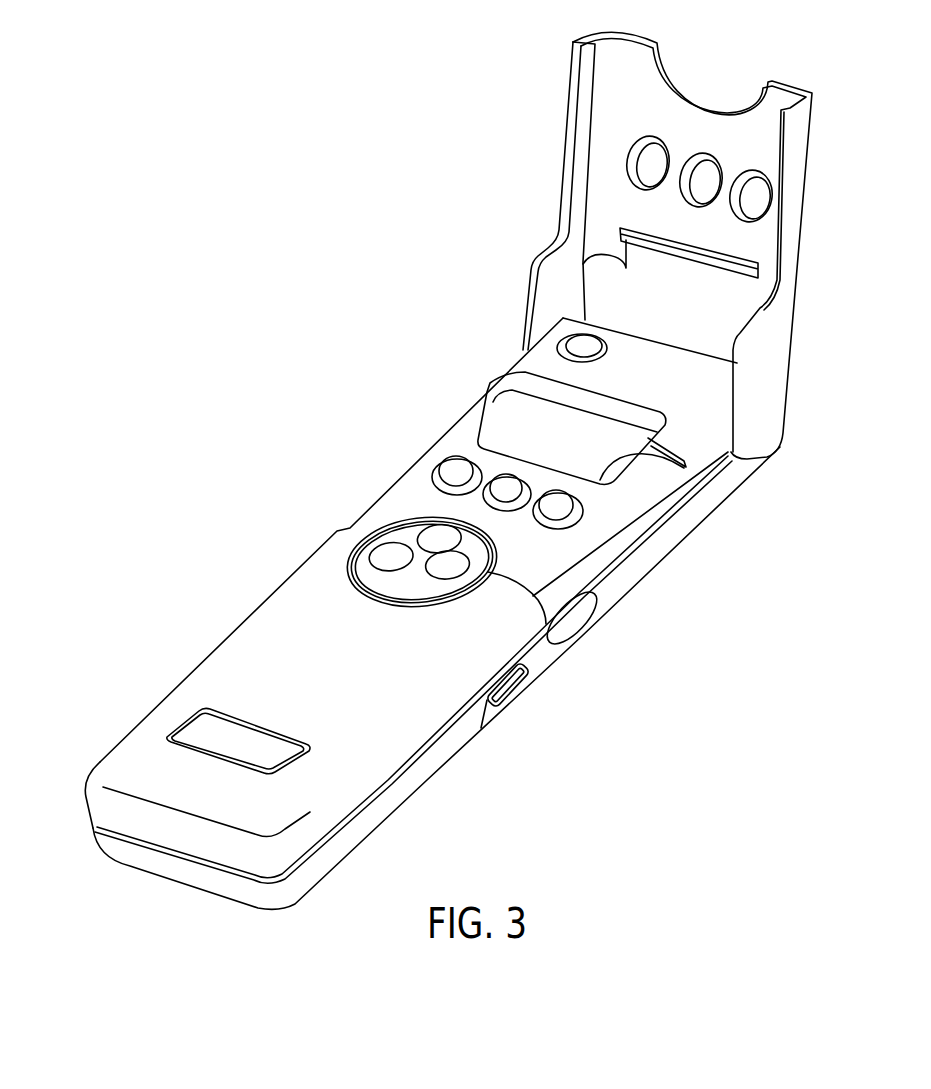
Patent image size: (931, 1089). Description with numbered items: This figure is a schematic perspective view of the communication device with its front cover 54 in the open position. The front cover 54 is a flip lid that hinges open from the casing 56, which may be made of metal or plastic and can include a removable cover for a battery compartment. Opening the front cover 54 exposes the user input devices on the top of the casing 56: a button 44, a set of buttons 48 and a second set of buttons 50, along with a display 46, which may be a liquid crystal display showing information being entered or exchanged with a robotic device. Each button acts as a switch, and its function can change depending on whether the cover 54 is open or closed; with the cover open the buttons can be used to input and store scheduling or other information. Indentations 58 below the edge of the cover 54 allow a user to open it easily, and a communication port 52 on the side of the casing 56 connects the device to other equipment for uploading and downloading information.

The button 44 is at (570, 340).
The display 46 is at (698, 477).
The set of buttons 48 is at (557, 490).
The second set of buttons 50 is at (387, 530).
The communication port 52 is at (520, 688).
The front cover 54 is at (780, 358).
The casing 56 is at (93, 783).
The indentations 58 is at (575, 623).